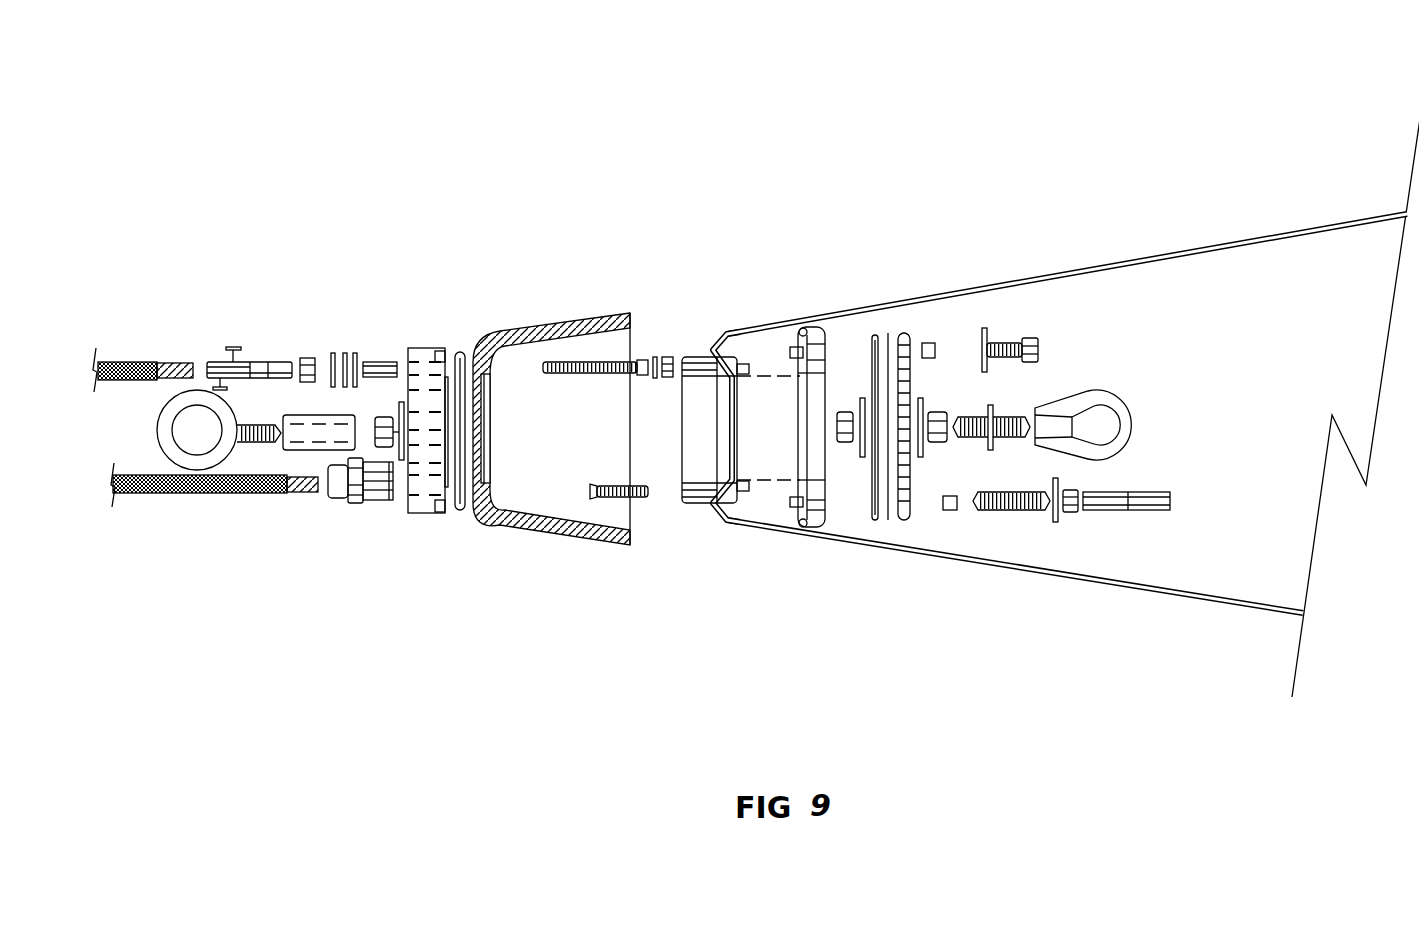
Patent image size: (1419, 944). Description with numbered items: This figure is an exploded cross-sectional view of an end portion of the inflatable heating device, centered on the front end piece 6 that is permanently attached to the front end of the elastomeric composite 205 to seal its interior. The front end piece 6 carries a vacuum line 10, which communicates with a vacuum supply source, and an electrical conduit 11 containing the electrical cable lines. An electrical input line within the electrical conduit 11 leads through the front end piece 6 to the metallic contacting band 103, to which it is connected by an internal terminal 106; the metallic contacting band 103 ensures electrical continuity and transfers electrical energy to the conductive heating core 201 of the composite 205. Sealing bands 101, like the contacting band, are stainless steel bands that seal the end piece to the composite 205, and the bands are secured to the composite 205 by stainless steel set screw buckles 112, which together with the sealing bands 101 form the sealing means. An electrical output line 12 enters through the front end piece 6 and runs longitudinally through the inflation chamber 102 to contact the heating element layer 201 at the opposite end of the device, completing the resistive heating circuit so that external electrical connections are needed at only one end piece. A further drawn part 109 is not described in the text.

The front end piece 6 is at (494, 336).
The vacuum line 10 is at (1110, 525).
The electrical conduit 11 is at (266, 364).
The electrical output line 12 is at (340, 500).
The sealing bands 101 is at (748, 348).
The inflation chamber 102 is at (1160, 322).
The metallic contacting band 103 is at (676, 345).
The internal terminal 106 is at (577, 348).
The plate 109 is at (797, 532).
The set screw buckles 112 is at (647, 500).
The conductive heating core 201 is at (710, 340).
The elastomeric composite 205 is at (968, 286).